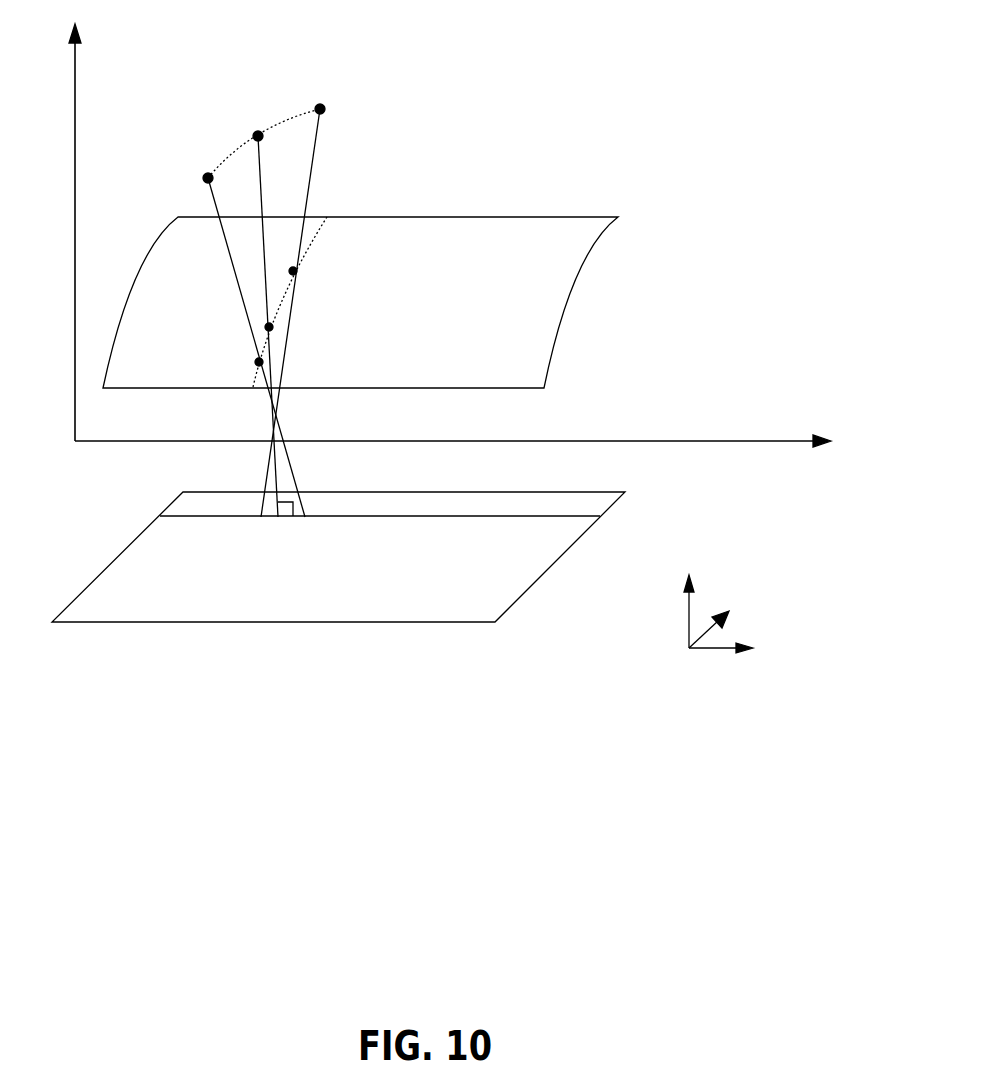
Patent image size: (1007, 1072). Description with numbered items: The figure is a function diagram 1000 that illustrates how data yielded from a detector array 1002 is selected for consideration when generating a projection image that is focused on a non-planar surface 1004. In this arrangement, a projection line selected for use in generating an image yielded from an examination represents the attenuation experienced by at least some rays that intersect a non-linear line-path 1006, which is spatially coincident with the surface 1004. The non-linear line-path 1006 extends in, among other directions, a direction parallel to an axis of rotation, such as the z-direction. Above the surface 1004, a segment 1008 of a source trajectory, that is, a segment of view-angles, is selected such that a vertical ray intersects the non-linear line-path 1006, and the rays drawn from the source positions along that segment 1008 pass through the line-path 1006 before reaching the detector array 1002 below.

The function diagram 1000 is at (657, 48).
The detector array 1002 is at (590, 492).
The non-planar surface 1004 is at (549, 216).
The non-linear line-path 1006 is at (305, 252).
The segment of a source trajectory 1008 is at (232, 153).